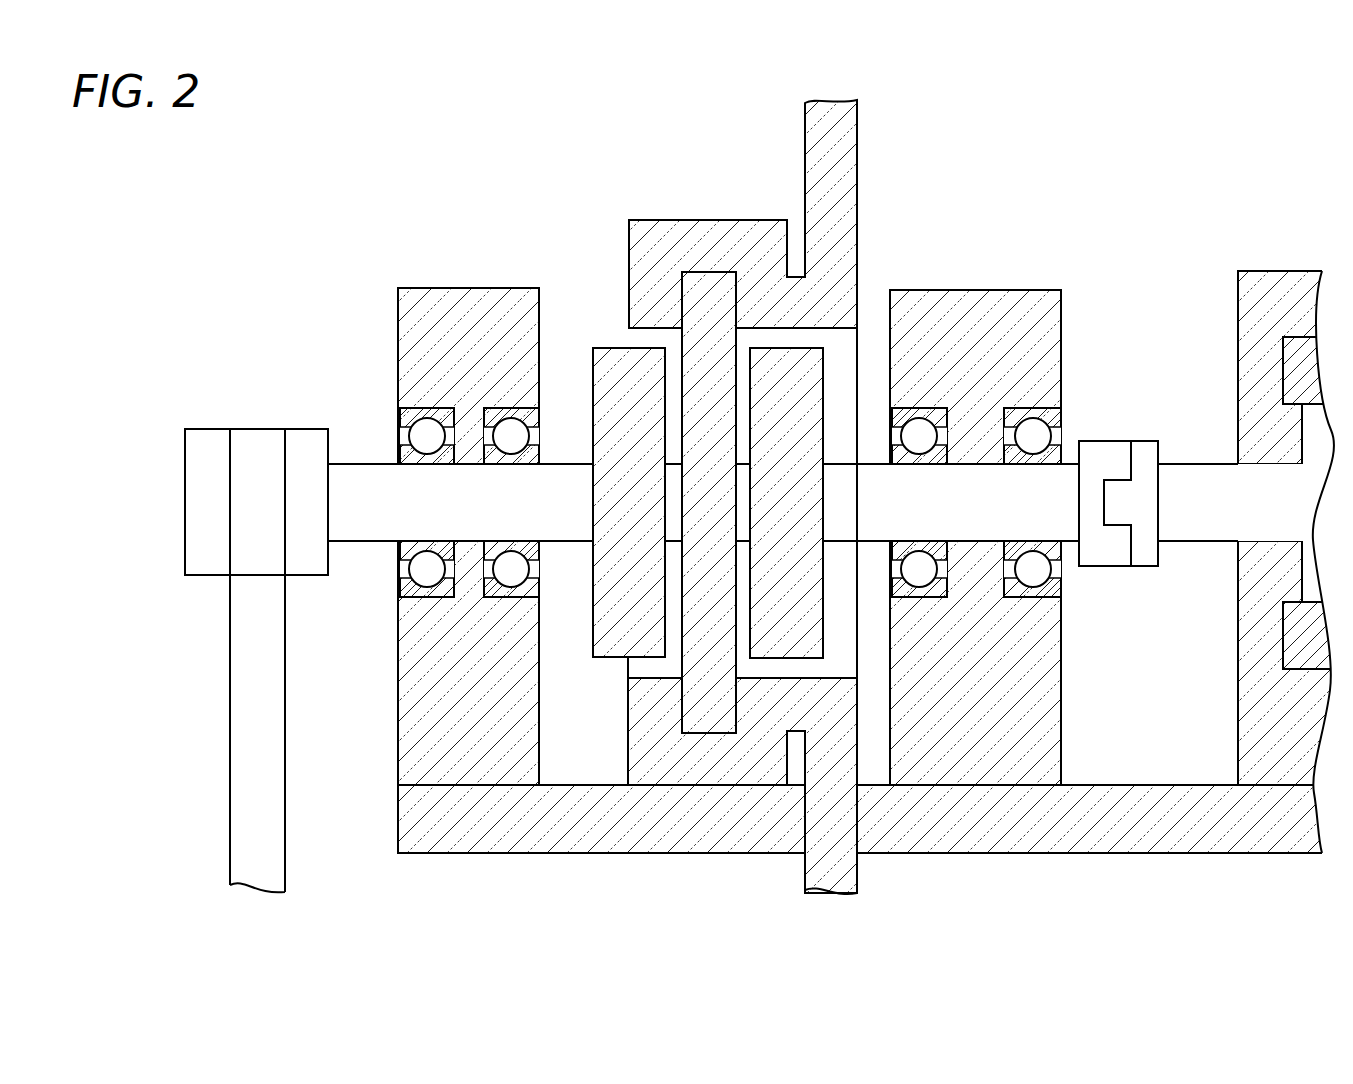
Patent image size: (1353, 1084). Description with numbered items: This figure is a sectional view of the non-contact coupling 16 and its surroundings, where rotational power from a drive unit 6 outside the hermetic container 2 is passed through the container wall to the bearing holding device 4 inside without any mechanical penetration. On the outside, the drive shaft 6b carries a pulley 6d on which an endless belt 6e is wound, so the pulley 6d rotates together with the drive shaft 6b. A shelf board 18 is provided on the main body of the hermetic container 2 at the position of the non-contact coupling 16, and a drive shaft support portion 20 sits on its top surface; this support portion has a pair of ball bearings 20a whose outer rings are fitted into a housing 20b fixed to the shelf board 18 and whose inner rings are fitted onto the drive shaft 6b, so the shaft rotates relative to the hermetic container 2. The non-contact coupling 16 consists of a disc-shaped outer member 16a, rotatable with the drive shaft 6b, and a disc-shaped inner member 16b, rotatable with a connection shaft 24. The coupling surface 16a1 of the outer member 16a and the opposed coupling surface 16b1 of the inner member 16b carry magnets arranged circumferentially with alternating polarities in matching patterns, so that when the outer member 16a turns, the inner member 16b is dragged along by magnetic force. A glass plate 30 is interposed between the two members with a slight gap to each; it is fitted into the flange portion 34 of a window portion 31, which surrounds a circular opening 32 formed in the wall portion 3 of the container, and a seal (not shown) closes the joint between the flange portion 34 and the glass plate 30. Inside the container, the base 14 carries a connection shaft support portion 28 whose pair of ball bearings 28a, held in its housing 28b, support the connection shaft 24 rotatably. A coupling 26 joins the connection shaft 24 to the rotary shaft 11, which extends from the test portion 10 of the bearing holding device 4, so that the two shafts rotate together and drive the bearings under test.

The hermetic container 2 is at (805, 140).
The wall portion 3 is at (837, 162).
The bearing holding device 4 is at (1208, 238).
The drive unit 6 is at (188, 237).
The drive shaft 6b is at (357, 477).
The pulley 6d is at (197, 508).
The endless belt 6e is at (243, 696).
The test portion 10 is at (1268, 282).
The rotary shaft 11 is at (1195, 525).
The base 14 is at (1100, 838).
The non-contact coupling 16 is at (609, 195).
The outer member 16a is at (622, 436).
The coupling surface of the outer member 16a1 is at (668, 388).
The inner member 16b is at (848, 439).
The coupling surface of the inner member 16b1 is at (748, 546).
The shelf board 18 is at (652, 838).
The drive shaft support portion 20 is at (431, 533).
The ball bearings 20a is at (512, 578).
The housing of the drive shaft support portion 20b is at (420, 745).
The connection shaft 24 is at (972, 480).
The coupling 26 is at (1113, 441).
The connection shaft support portion 28 is at (1025, 537).
The ball bearings 28a is at (918, 572).
The housing of the connection shaft support portion 28b is at (1050, 730).
The glass plate 30 is at (703, 283).
The window portion 31 is at (647, 218).
The circular opening 32 is at (848, 335).
The flange portion 34 is at (715, 763).